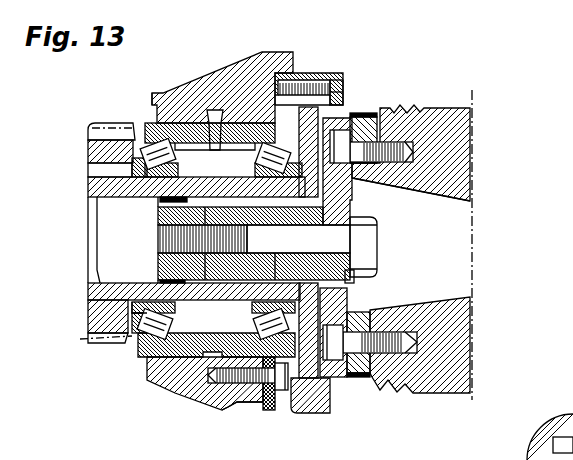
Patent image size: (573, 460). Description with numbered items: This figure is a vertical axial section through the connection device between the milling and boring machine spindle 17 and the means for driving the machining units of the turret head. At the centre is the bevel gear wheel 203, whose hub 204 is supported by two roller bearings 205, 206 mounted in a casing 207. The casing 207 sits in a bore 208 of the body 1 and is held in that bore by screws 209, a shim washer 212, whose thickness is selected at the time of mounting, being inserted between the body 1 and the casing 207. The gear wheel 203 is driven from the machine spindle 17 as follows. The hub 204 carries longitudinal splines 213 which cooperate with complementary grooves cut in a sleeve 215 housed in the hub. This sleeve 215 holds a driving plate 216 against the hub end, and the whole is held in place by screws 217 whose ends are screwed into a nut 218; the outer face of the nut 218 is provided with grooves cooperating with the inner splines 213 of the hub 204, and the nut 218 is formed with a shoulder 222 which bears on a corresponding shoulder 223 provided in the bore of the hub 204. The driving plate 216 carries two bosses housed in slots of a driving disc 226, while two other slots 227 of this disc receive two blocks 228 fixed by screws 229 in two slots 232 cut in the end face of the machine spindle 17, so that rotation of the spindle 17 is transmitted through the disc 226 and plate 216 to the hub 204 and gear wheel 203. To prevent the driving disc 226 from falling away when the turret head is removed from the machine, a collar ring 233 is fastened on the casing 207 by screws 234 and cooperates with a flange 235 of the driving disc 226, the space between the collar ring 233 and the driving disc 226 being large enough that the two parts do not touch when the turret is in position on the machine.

The body 1 is at (183, 380).
The machine spindle 17 is at (455, 158).
The bevel gear wheel 203 is at (85, 352).
The hub 204 is at (222, 300).
The roller bearing 205 is at (142, 355).
The roller bearing 206 is at (247, 402).
The casing 207 is at (152, 378).
The bore 208 is at (198, 123).
The screws 209 is at (220, 388).
The shim washer 212 is at (268, 410).
The longitudinal splines 213 is at (240, 200).
The sleeve 215 is at (375, 273).
The driving plate 216 is at (343, 88).
The screws 217 is at (373, 242).
The nut 218 is at (157, 216).
The shoulder 222 is at (160, 282).
The shoulder 223 is at (180, 196).
The driving disc 226 is at (352, 187).
The slots 227 is at (368, 140).
The blocks 228 is at (378, 170).
The screws 229 is at (390, 133).
The slots 232 is at (375, 117).
The collar ring 233 is at (325, 414).
The screws 234 is at (318, 73).
The flange 235 is at (342, 112).